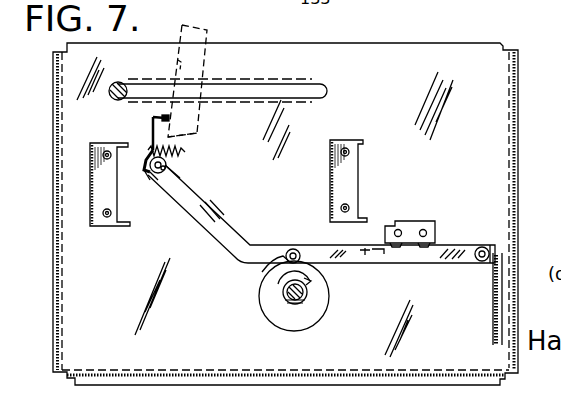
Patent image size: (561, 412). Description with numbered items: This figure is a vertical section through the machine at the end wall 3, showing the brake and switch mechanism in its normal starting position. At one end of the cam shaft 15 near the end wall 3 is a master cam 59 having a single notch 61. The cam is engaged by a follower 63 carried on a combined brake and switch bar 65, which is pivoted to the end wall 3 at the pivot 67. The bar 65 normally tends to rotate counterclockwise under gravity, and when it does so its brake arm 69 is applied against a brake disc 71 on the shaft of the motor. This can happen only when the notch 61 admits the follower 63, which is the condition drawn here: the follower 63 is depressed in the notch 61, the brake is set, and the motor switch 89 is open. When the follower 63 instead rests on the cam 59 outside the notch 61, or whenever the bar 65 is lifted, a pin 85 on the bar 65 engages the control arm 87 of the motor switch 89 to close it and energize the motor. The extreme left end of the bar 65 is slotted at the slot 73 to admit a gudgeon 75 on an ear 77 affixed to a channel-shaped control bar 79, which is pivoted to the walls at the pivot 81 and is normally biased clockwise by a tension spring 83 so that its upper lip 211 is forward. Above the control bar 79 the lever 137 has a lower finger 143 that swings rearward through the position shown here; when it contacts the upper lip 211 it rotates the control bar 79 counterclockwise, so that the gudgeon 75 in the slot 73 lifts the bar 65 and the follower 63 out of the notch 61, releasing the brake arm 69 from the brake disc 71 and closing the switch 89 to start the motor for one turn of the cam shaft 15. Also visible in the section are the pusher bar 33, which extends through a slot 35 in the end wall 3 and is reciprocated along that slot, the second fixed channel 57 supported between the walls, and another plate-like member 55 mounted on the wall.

The end wall 3 is at (480, 140).
The cam shaft 15 is at (284, 297).
The pusher bar 33 is at (124, 82).
The slot 35 is at (246, 84).
The mounting plate 55 is at (330, 173).
The second fixed channel 57 is at (92, 179).
The master cam 59 is at (320, 310).
The notch 61 is at (266, 263).
The follower 63 is at (294, 249).
The combined brake and switch bar 65 is at (225, 223).
The pivot 67 is at (482, 247).
The brake arm 69 is at (498, 281).
The brake disc 71 is at (499, 293).
The slot 73 is at (170, 165).
The gudgeon 75 is at (181, 174).
The ear 77 is at (153, 173).
The control bar 79 is at (151, 130).
The pivot 81 is at (145, 178).
The tension spring 83 is at (185, 152).
The pin 85 is at (365, 255).
The control arm 87 is at (380, 250).
The motor switch 89 is at (410, 227).
The lever 137 is at (192, 23).
The lower finger 143 is at (192, 130).
The upper lip 211 is at (163, 117).